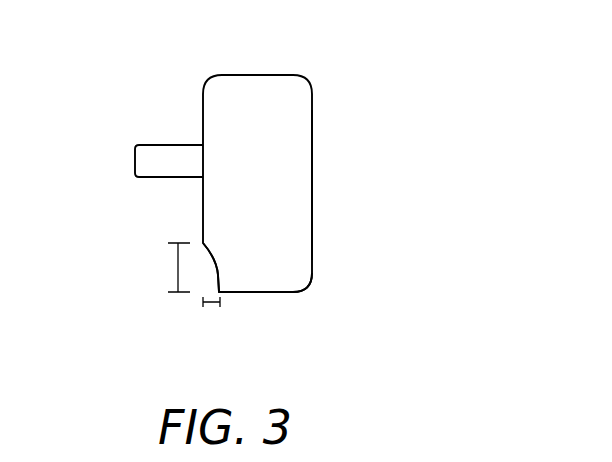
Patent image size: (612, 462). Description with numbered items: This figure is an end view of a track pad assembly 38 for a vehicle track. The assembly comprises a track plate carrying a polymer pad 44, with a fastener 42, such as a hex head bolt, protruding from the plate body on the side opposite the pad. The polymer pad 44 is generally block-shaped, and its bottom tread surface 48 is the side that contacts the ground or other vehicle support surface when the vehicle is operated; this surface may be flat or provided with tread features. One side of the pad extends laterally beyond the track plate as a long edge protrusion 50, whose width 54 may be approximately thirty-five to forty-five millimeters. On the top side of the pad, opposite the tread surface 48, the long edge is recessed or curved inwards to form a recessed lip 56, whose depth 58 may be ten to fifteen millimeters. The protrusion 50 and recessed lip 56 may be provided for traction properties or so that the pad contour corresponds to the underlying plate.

The track pad assembly 38 is at (344, 72).
The fastener 42 is at (172, 145).
The polymer pad 44 is at (288, 212).
The tread surface 48 is at (312, 145).
The long edge protrusion 50 is at (272, 277).
The width 54 is at (177, 266).
The recessed lip 56 is at (217, 270).
The depth 58 is at (212, 308).